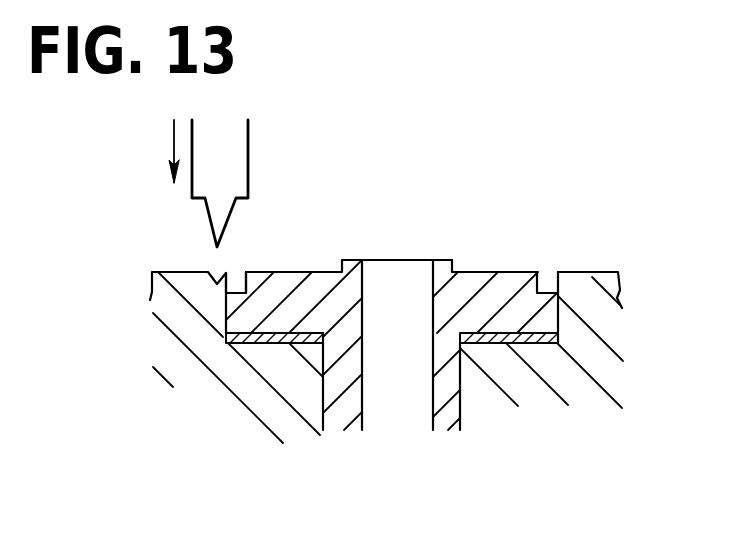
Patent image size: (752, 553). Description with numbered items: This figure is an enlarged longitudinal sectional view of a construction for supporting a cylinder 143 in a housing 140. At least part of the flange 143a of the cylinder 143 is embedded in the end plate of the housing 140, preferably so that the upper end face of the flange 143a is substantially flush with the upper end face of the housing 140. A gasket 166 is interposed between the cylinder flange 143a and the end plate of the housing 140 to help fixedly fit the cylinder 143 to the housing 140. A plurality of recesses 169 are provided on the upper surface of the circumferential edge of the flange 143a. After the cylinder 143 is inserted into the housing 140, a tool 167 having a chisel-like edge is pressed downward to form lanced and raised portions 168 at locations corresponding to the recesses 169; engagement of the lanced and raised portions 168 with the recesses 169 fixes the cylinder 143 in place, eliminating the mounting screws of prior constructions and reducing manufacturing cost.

The housing 140 is at (590, 300).
The cylinder 143 is at (455, 370).
The flange 143a is at (477, 285).
The gasket 166 is at (228, 336).
The tool 167 is at (232, 150).
The lanced and raised portions 168 is at (225, 278).
The recess 169 is at (242, 278).